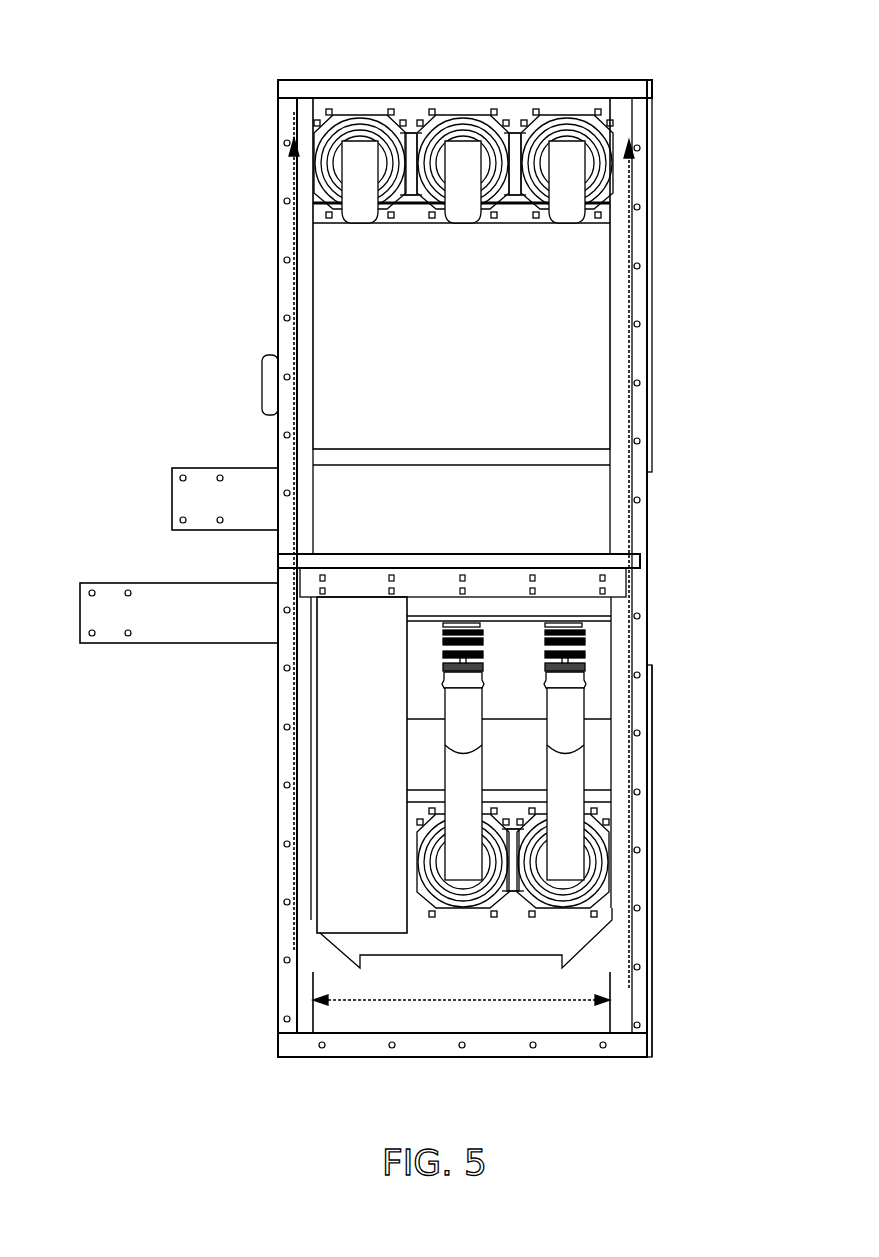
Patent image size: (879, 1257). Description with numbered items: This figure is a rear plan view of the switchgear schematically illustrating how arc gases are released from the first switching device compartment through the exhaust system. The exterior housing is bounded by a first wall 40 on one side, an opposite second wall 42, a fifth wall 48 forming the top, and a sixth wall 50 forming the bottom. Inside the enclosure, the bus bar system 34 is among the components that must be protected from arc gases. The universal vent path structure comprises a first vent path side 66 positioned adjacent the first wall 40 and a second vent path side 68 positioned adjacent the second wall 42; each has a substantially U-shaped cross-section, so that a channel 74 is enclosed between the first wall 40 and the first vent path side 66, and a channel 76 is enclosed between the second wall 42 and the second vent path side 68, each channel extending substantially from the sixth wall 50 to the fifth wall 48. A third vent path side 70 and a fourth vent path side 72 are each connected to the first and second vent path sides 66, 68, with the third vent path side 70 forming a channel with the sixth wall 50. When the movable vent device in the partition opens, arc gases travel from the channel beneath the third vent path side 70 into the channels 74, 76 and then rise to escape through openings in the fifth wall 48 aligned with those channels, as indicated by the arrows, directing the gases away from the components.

The bus bar system 34 is at (262, 376).
The first wall 40 is at (278, 173).
The second wall 42 is at (652, 235).
The fifth wall 48 is at (465, 90).
The sixth wall 50 is at (573, 1045).
The first vent path side 66 is at (283, 876).
The second vent path side 68 is at (652, 828).
The third vent path side 70 is at (513, 1018).
The fourth vent path side 72 is at (603, 487).
The channel 74 is at (293, 110).
The channel 76 is at (625, 110).